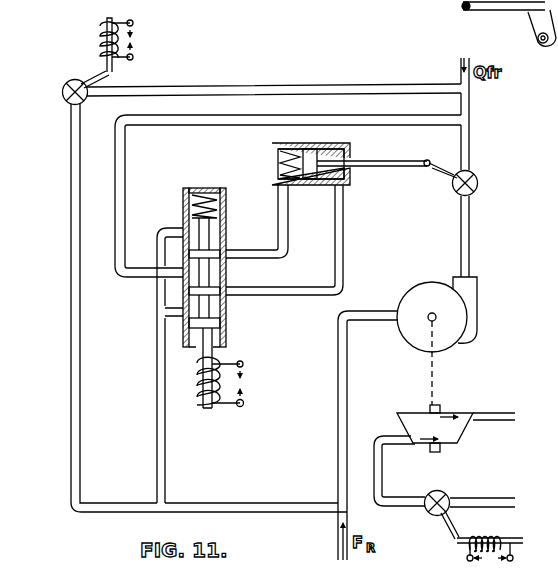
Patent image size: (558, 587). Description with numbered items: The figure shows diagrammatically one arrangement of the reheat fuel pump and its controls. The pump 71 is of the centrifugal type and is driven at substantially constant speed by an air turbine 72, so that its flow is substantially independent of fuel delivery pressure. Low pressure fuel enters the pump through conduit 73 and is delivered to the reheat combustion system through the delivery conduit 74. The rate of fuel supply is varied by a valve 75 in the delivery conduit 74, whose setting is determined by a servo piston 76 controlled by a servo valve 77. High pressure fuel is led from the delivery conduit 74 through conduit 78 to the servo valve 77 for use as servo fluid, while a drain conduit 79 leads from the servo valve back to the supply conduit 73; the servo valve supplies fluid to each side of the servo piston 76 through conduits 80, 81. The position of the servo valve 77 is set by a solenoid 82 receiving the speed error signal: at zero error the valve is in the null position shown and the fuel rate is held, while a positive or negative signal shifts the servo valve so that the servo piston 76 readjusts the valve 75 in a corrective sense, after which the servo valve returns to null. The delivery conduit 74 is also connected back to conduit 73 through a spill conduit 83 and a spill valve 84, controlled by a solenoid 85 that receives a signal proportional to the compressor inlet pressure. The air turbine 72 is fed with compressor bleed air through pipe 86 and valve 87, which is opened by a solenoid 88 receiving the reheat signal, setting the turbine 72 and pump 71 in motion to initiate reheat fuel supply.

The pump 71 is at (478, 303).
The air turbine 72 is at (459, 431).
The fuel supply conduit 73 is at (337, 433).
The delivery conduit 74 is at (468, 146).
The valve 75 is at (477, 179).
The servo piston 76 is at (345, 150).
The servo valve 77 is at (200, 190).
The conduit 78 is at (186, 125).
The drain conduit 79 is at (157, 392).
The conduit 80 is at (266, 251).
The conduit 81 is at (255, 294).
The solenoid 82 is at (196, 405).
The spill conduit 83 is at (268, 91).
The spill valve 84 is at (66, 86).
The solenoid 85 is at (106, 24).
The pipe 86 is at (383, 471).
The valve 87 is at (448, 495).
The solenoid 88 is at (497, 534).